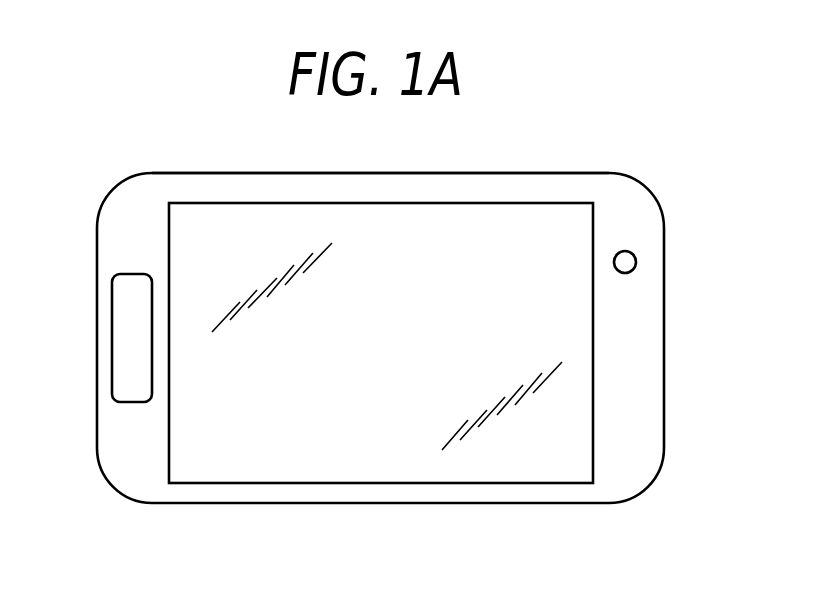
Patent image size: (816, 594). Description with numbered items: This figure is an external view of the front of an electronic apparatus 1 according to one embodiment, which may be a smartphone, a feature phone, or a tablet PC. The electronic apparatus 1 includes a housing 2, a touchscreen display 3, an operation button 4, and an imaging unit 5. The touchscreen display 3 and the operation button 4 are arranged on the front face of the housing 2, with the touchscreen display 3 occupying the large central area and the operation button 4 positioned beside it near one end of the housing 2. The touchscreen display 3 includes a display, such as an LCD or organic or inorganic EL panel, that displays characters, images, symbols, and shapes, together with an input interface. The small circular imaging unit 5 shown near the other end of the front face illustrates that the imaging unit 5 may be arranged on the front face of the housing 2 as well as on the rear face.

The electronic apparatus 1 is at (568, 138).
The housing 2 is at (417, 173).
The touchscreen display 3 is at (348, 432).
The operation button 4 is at (127, 341).
The imaging unit 5 is at (625, 262).